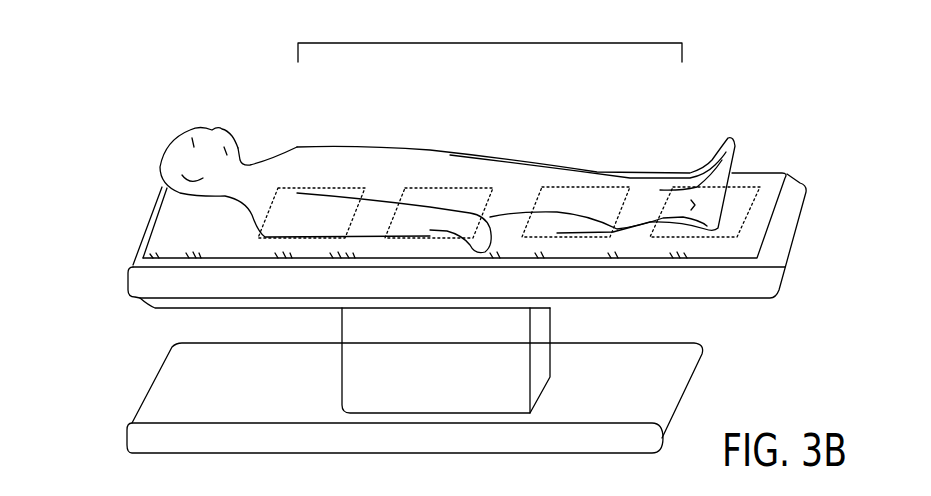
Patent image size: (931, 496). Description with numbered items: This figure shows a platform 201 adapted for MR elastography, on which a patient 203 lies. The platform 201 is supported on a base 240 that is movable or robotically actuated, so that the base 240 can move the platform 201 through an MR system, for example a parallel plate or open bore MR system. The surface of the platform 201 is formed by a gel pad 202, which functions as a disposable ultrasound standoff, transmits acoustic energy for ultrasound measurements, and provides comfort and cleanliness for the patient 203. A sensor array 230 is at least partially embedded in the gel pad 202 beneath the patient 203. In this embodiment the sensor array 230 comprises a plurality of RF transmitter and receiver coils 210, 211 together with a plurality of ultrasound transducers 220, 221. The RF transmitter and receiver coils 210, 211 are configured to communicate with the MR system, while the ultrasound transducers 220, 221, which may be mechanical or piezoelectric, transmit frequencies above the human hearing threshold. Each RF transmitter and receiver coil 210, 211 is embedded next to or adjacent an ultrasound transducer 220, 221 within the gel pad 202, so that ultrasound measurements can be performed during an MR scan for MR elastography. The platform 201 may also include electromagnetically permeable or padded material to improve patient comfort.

The platform 201 is at (782, 234).
The gel pad 202 is at (780, 178).
The patient 203 is at (200, 120).
The RF transmitter and receiver coil 210 is at (338, 188).
The ultrasound transducer 220 is at (432, 186).
The RF transmitter and receiver coil 211 is at (528, 212).
The ultrasound transducer 221 is at (656, 212).
The sensor array 230 is at (490, 37).
The base 240 is at (113, 405).